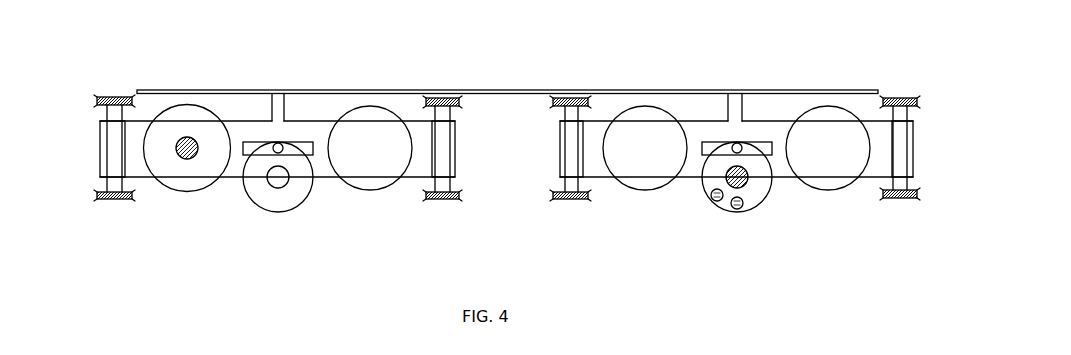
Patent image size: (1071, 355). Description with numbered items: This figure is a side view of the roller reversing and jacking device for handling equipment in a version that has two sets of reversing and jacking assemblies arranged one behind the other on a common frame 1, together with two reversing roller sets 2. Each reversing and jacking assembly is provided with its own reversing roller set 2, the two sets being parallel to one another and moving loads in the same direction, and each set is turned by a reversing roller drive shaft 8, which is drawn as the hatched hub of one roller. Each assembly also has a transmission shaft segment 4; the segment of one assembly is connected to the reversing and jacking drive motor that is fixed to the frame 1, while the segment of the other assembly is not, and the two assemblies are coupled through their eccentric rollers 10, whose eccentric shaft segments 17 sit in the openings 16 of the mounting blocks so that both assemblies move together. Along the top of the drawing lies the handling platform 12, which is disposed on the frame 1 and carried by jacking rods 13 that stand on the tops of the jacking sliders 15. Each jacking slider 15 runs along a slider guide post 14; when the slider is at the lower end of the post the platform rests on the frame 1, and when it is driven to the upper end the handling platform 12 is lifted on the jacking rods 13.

The frame 1 is at (902, 97).
The reversing roller set 2 is at (190, 115).
The transmission shaft segment 4 is at (747, 185).
The reversing roller drive shaft 8 is at (190, 155).
The eccentric roller 10 is at (287, 198).
The handling platform 12 is at (510, 90).
The jacking rod 13 is at (278, 100).
The slider guide post 14 is at (112, 133).
The jacking slider 15 is at (322, 173).
The opening 16 is at (247, 147).
The eccentric shaft segment 17 is at (282, 147).